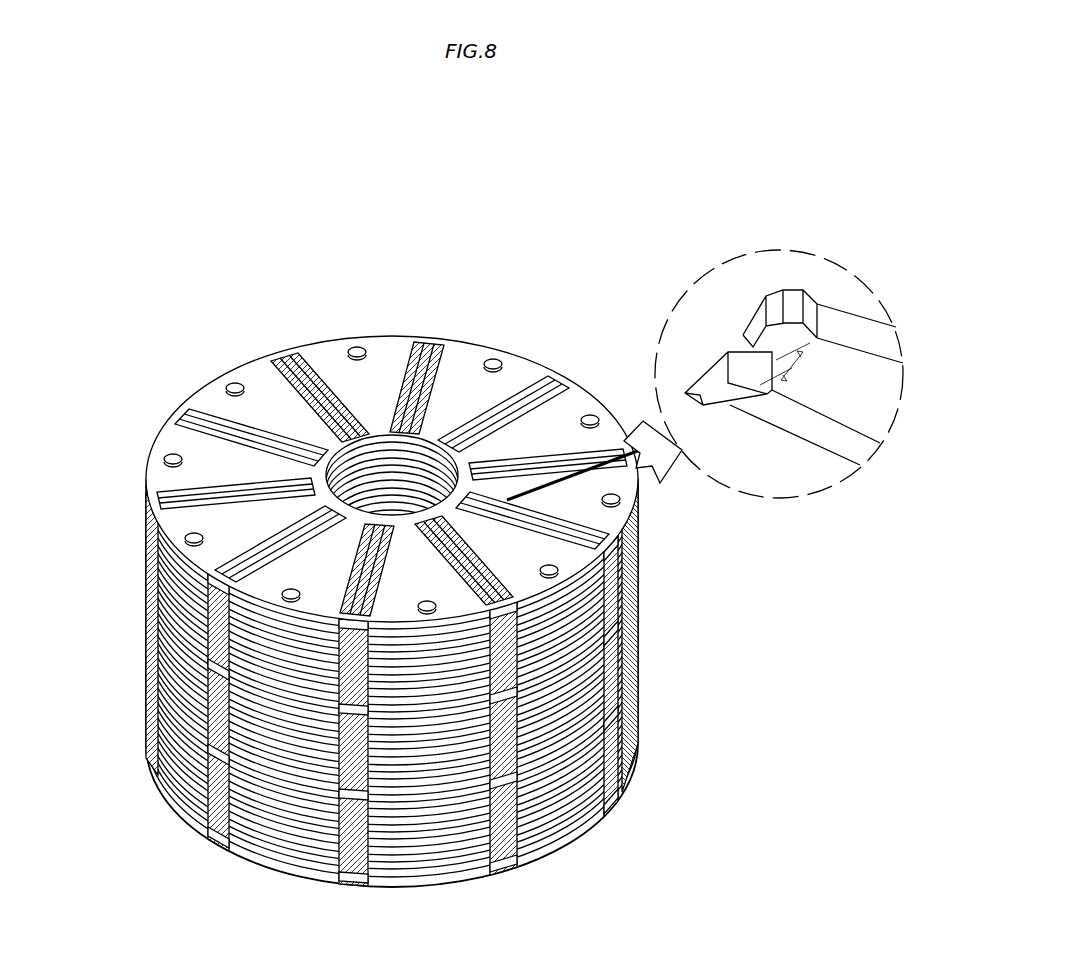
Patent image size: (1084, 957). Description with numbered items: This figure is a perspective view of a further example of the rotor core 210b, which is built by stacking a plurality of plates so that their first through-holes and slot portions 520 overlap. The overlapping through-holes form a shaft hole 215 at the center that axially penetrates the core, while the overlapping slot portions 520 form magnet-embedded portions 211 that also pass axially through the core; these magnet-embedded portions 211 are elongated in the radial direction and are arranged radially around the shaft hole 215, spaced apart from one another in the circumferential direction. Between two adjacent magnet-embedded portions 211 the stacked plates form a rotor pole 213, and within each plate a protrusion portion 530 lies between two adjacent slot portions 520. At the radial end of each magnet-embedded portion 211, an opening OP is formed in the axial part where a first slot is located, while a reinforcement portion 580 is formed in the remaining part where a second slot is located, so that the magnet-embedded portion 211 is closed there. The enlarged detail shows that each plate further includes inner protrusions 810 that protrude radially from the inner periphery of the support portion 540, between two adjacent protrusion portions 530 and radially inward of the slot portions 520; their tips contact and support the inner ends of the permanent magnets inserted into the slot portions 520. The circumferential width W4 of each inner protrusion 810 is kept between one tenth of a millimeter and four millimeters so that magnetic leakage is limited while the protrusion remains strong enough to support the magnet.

The rotor core 210b is at (452, 174).
The magnet-embedded portion 211 is at (287, 382).
The rotor pole 213 is at (157, 507).
The shaft hole 215 is at (398, 470).
The reinforcement portion 580 is at (560, 383).
The opening OP is at (613, 603).
The inner protrusion 810 is at (753, 347).
The support portion 540 is at (697, 318).
The protrusion portion 530 is at (833, 280).
The slot portion 520 is at (862, 398).
The width of the inner protrusion W4 is at (799, 364).